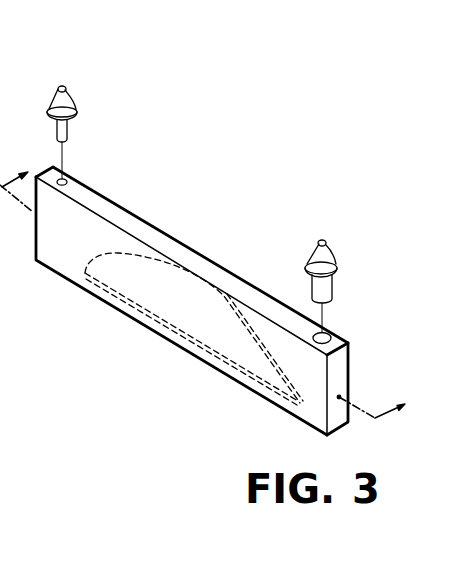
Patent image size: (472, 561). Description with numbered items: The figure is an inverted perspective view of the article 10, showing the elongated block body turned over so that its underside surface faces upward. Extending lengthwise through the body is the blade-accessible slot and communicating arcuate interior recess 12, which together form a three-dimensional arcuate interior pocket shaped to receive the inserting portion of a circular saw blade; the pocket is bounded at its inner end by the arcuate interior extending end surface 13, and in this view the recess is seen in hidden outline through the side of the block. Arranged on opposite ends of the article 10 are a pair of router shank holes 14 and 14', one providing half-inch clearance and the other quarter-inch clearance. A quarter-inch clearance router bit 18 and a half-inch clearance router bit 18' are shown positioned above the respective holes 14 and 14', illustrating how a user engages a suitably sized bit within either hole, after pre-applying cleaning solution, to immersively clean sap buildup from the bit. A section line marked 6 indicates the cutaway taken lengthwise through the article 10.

The article 10 is at (192, 295).
The arcuate interior recess 12 is at (205, 352).
The arcuate interior extending end surface 13 is at (200, 290).
The router shank hole 14 is at (108, 164).
The router shank hole 14' is at (365, 319).
The router bit 18 is at (94, 111).
The router bit 18' is at (353, 259).
The section line 6- 6 is at (213, 279).